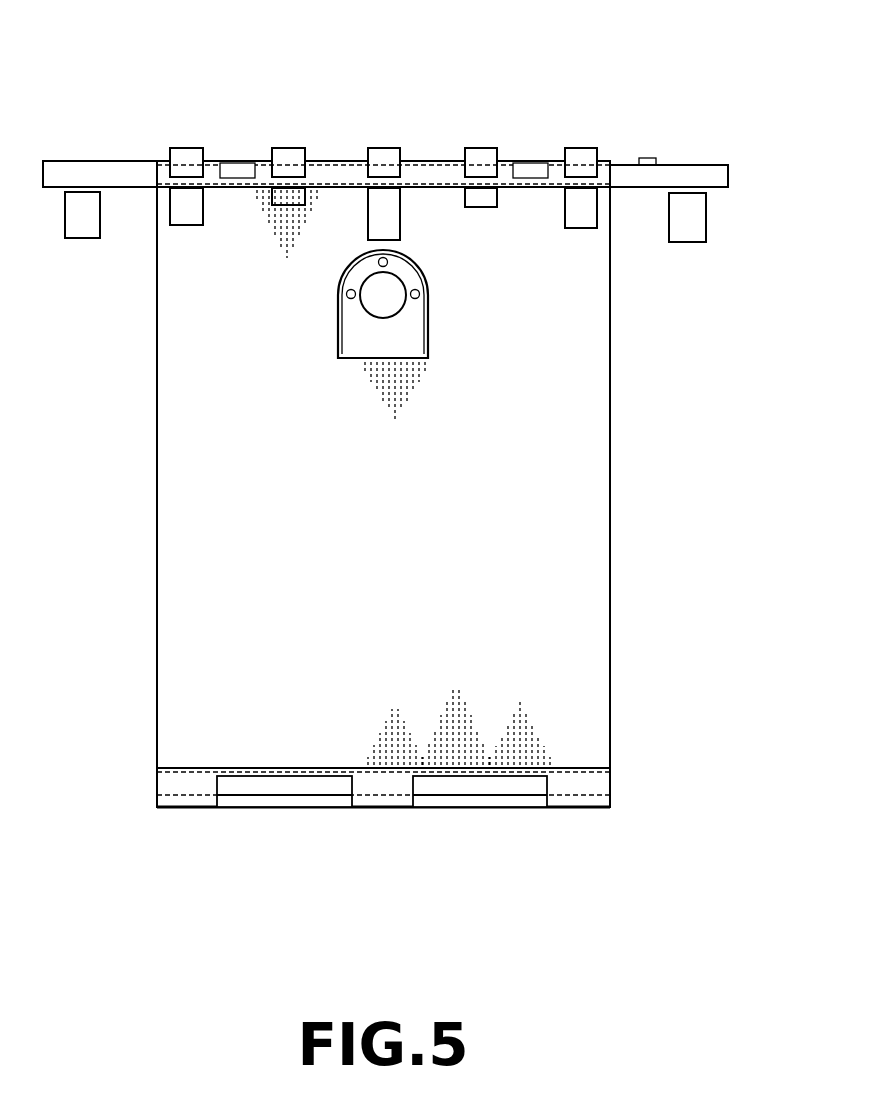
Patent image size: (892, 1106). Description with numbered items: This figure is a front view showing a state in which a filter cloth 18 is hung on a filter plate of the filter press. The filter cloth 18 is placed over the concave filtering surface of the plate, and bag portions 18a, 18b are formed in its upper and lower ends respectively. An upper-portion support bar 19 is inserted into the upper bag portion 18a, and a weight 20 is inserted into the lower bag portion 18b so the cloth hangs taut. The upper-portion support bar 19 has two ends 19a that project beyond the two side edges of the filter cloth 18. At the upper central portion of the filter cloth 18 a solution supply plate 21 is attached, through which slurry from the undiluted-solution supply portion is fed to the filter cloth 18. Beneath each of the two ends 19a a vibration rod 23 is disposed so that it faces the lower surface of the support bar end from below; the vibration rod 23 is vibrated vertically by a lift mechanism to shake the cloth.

The filter cloth 18 is at (610, 455).
The upper bag portion 18a is at (430, 162).
The lower bag portion 18b is at (386, 797).
The upper-portion support bar 19 is at (531, 172).
The ends of the upper-portion support bar 19a is at (87, 170).
The weight 20 is at (505, 789).
The solution supply plate 21 is at (347, 309).
The vibration rod 23 is at (83, 240).